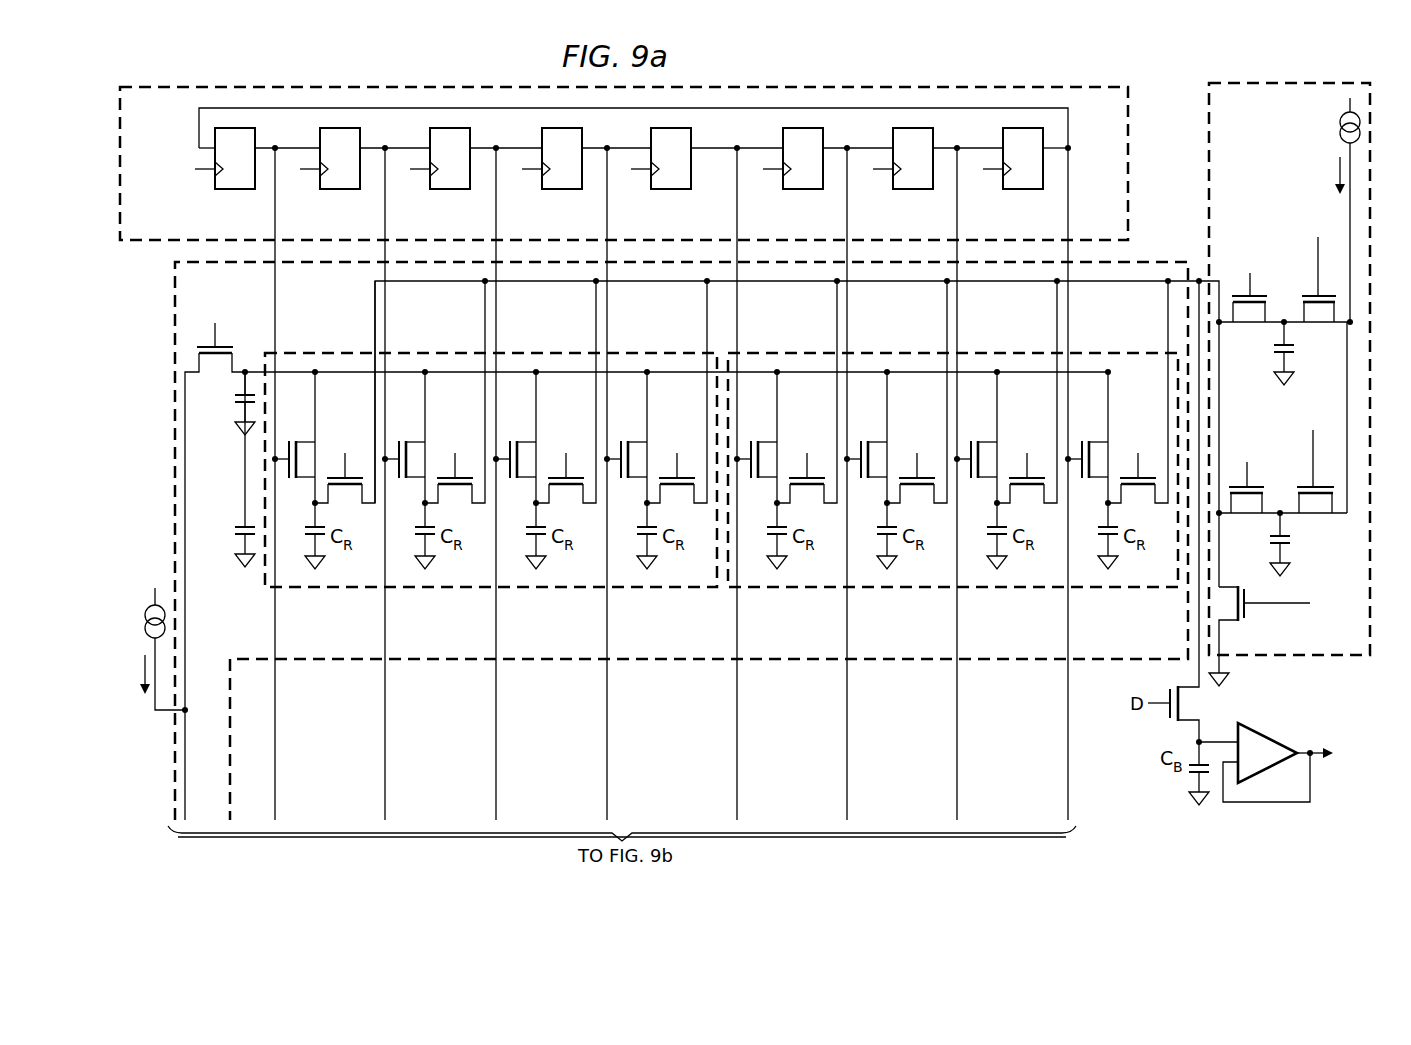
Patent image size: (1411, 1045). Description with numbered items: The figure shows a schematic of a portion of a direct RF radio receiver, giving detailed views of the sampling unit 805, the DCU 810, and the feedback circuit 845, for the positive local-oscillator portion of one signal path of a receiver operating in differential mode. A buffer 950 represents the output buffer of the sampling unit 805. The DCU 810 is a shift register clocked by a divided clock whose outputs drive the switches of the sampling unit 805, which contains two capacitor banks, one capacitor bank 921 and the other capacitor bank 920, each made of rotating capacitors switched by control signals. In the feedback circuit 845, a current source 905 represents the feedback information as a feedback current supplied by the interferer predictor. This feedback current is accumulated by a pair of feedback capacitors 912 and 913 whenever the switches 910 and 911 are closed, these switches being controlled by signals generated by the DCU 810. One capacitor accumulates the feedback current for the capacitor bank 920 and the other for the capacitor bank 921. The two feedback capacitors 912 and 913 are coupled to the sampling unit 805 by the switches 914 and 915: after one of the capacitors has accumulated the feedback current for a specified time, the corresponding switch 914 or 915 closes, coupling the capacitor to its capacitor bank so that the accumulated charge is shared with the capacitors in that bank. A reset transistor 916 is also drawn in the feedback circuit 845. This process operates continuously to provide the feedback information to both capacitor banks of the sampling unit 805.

The DCU 810 is at (404, 82).
The sampling unit 805 is at (667, 541).
The capacitor bank 921 is at (452, 595).
The capacitor bank 920 is at (992, 595).
The feedback circuit 845 is at (1289, 354).
The current source 905 is at (1338, 120).
The switch 914 is at (1257, 290).
The switch 910 is at (1307, 291).
The capacitor 912 is at (1273, 345).
The switch 915 is at (1254, 480).
The switch 911 is at (1303, 482).
The capacitor 913 is at (1293, 542).
The reset transistor 916 is at (1247, 619).
The buffer 950 is at (1287, 716).